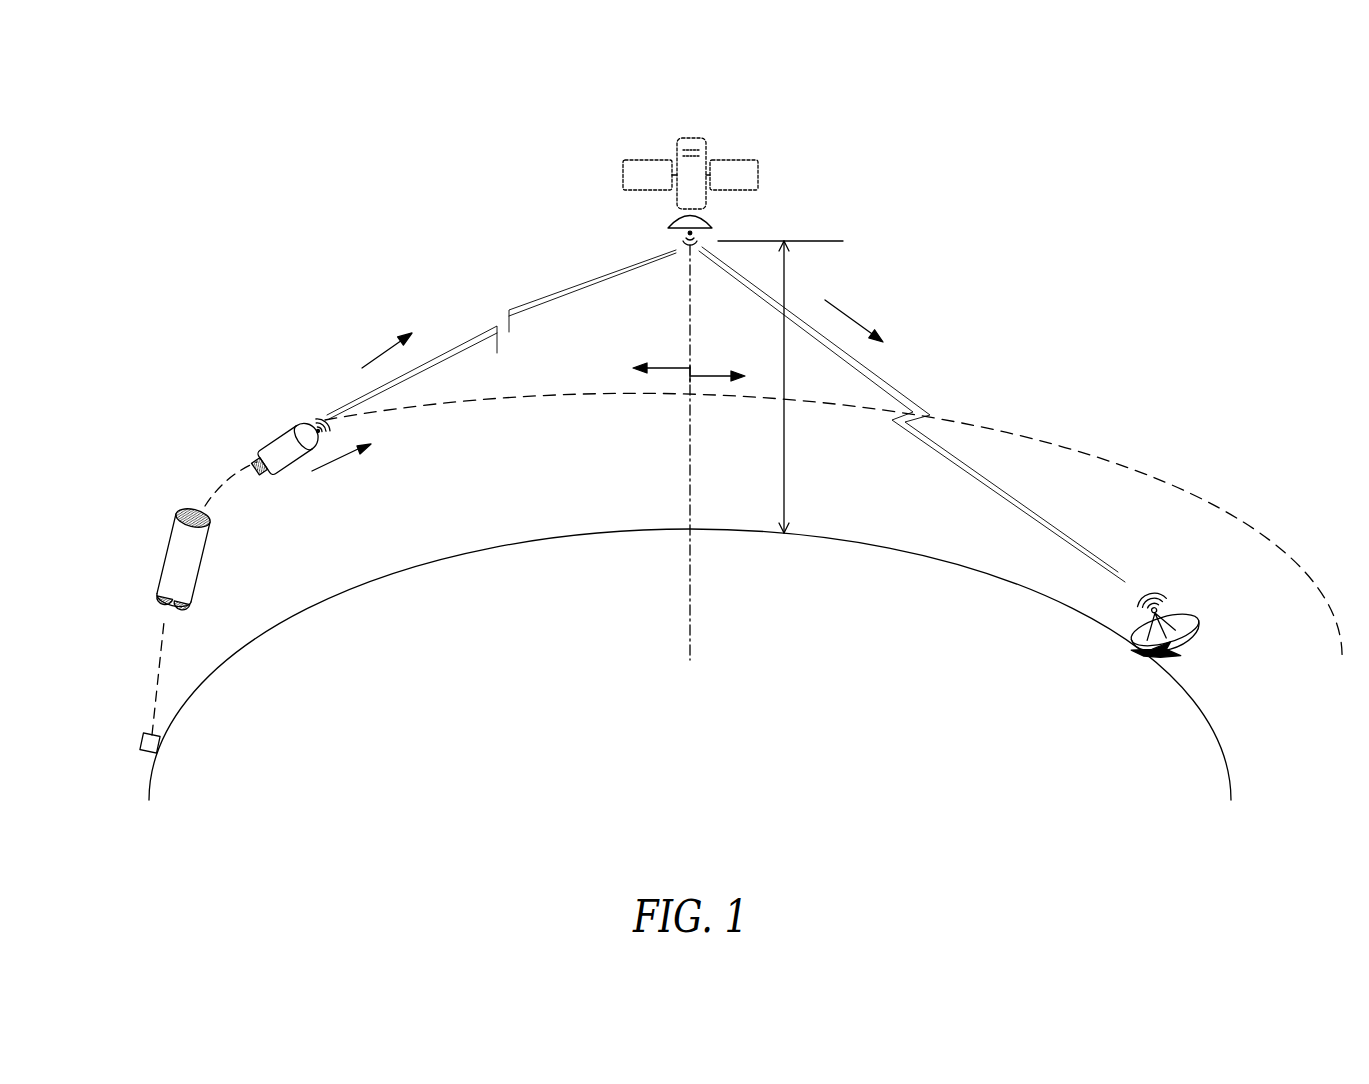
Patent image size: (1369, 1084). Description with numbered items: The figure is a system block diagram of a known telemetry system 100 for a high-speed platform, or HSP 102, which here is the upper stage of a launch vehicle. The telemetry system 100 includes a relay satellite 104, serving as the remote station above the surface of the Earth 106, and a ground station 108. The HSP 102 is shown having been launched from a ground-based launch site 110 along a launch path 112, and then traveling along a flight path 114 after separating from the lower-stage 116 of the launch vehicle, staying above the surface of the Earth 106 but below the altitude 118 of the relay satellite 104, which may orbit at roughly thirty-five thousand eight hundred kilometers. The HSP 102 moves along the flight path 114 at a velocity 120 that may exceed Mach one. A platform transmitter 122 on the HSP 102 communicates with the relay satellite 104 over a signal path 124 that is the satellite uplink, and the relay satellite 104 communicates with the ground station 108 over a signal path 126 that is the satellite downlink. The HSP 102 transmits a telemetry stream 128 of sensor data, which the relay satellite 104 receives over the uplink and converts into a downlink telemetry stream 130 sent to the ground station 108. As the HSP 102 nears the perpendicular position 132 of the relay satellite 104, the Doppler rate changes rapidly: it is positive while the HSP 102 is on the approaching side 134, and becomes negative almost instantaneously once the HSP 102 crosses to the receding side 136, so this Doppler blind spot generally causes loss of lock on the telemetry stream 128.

The telemetry system 100 is at (1068, 120).
The HSP 102 is at (275, 448).
The relay satellite 104 is at (697, 138).
The Earth 106 is at (247, 648).
The ground station 108 is at (1205, 623).
The ground-based launch site 110 is at (143, 737).
The launch path 112 is at (157, 662).
The flight path 114 is at (222, 487).
The lower-stage 116 is at (178, 554).
The altitude 118 is at (788, 495).
The velocity 120 is at (340, 465).
The platform transmitter 122 is at (312, 412).
The signal path 124 is at (495, 318).
The signal path 126 is at (915, 388).
The telemetry stream 128 is at (378, 352).
The downlink telemetry stream 130 is at (858, 322).
The perpendicular position 132 is at (690, 628).
The approaching side 134 is at (672, 366).
The receding side 136 is at (707, 374).